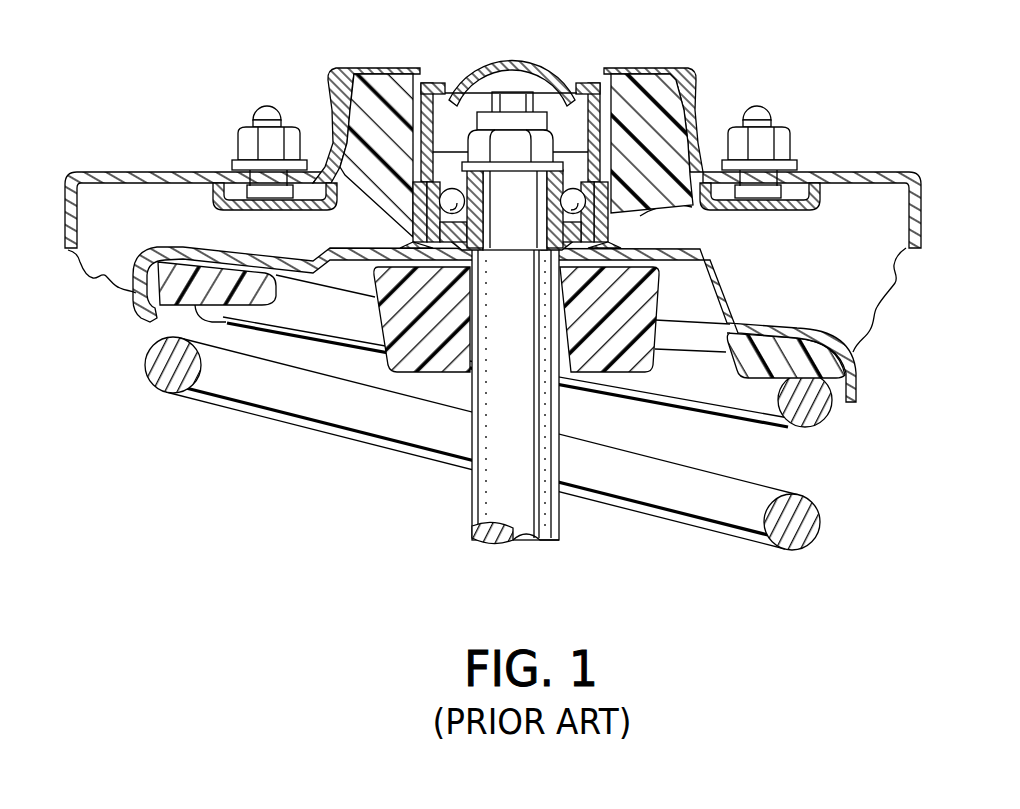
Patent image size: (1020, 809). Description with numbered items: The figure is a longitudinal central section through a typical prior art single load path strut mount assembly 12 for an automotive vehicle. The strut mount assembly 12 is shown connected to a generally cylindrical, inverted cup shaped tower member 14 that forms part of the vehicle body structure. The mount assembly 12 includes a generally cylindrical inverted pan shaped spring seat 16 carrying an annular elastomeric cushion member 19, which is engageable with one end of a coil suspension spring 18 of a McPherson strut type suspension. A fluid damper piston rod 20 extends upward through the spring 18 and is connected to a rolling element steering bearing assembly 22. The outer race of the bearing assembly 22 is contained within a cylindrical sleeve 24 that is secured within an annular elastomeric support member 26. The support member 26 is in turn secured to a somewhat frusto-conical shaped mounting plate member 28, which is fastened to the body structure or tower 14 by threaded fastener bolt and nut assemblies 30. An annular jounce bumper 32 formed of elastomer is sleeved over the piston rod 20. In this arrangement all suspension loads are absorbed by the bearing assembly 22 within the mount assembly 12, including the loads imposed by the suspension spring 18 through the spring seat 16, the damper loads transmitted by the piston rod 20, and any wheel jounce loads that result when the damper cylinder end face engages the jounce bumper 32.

The strut mount assembly 12 is at (795, 110).
The tower member 14 is at (887, 158).
The spring seat 16 is at (733, 272).
The coil suspension spring 18 is at (790, 552).
The elastomeric cushion member 19 is at (768, 338).
The piston rod 20 is at (470, 508).
The steering bearing assembly 22 is at (550, 125).
The cylindrical sleeve 24 is at (408, 126).
The elastomeric support member 26 is at (363, 97).
The mounting plate member 28 is at (687, 110).
The threaded fastener bolt and nut assemblies 30 is at (243, 130).
The jounce bumper 32 is at (393, 365).